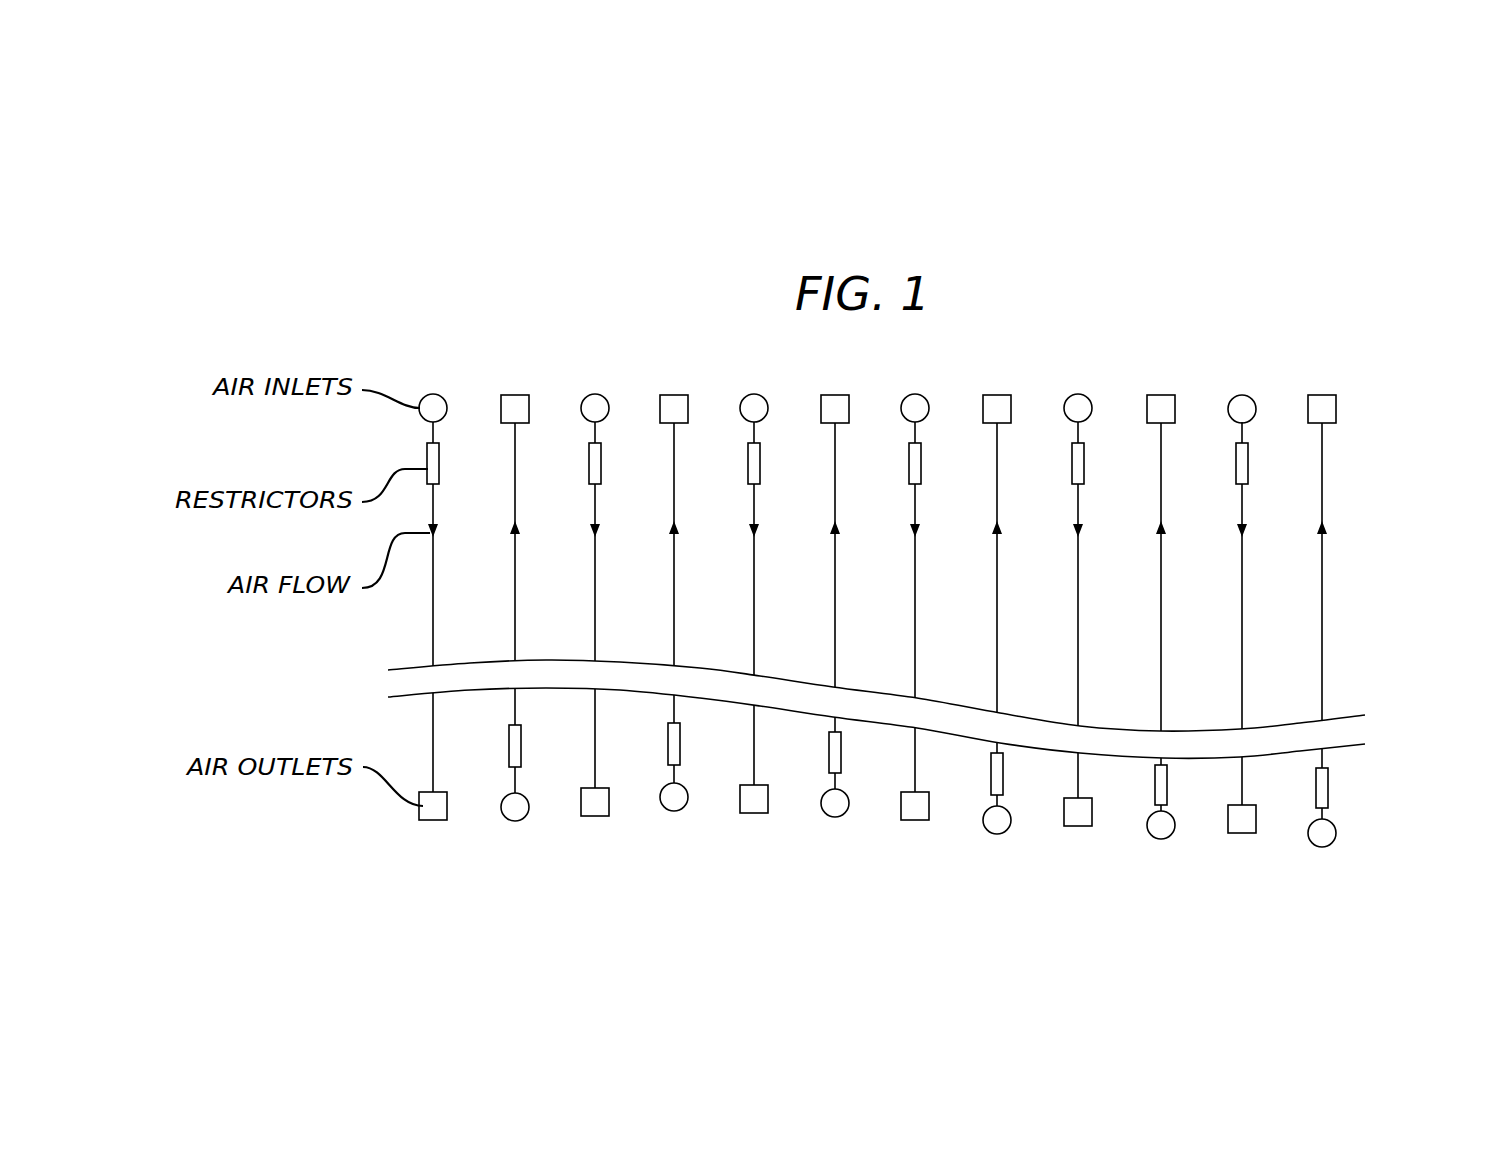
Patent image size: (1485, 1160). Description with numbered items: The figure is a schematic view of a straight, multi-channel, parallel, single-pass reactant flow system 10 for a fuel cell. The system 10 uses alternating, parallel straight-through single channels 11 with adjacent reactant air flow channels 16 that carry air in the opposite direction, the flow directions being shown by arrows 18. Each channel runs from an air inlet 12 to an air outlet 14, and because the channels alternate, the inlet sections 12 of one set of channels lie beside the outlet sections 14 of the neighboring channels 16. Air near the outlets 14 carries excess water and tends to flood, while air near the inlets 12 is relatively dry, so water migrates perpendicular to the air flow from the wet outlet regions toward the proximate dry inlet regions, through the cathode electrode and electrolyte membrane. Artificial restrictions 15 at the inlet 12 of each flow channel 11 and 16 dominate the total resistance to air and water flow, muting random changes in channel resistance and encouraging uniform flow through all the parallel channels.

The reactant flow system 10 is at (1385, 584).
The straight-through single channels 11 is at (434, 628).
The air inlets 12 is at (433, 394).
The air outlets 14 is at (674, 394).
The artificial restrictions 15 is at (440, 468).
The reactant air flow channels 16 is at (516, 618).
The arrows 18 is at (756, 532).